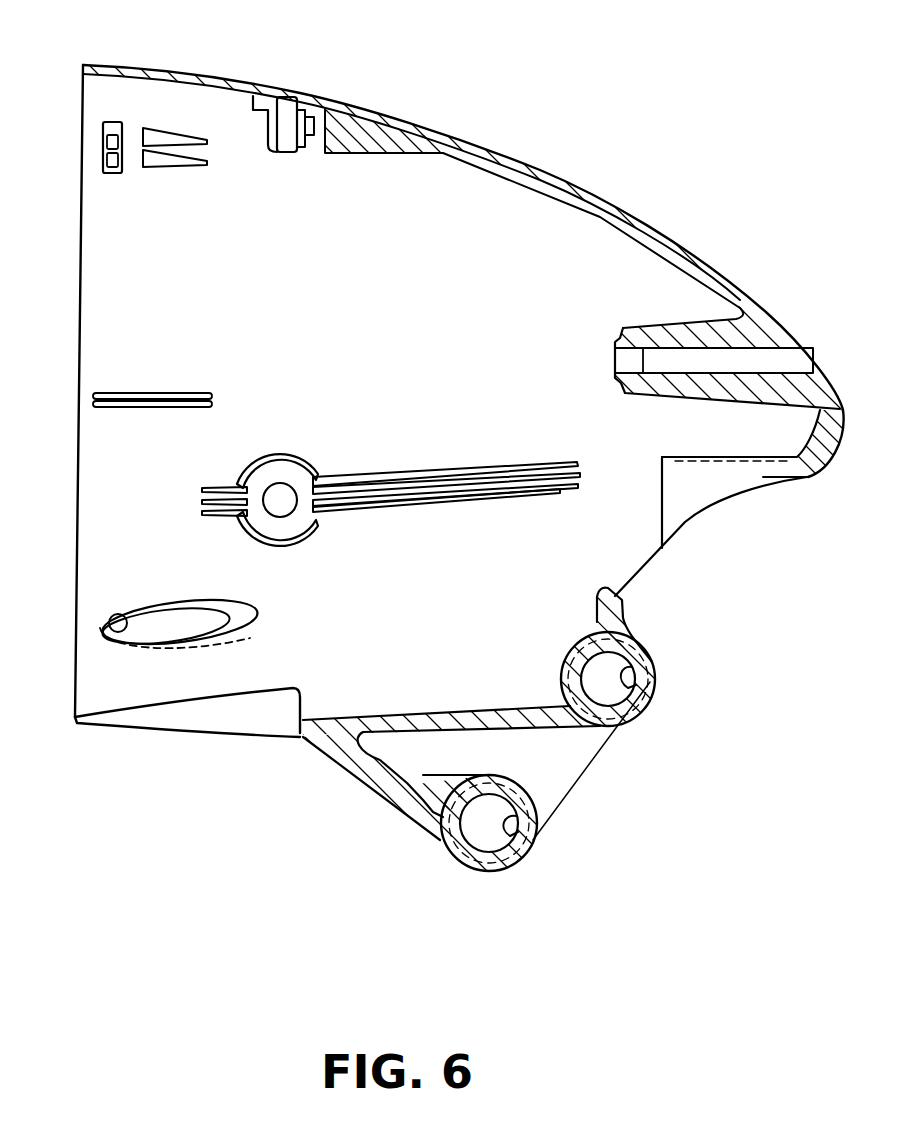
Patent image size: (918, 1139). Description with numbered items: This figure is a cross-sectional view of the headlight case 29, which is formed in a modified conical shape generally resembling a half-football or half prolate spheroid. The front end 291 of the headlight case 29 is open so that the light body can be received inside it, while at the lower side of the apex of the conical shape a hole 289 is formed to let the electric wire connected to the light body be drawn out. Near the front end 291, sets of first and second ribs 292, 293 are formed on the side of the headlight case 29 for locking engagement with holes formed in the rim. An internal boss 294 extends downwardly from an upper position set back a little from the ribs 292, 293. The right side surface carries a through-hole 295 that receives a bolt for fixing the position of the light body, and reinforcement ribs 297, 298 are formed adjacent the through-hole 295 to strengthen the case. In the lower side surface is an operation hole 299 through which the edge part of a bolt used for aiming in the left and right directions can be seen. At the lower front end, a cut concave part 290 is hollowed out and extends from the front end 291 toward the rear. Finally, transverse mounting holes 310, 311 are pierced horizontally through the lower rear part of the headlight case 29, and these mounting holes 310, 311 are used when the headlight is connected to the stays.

The headlight case 29 is at (568, 182).
The hole 289 is at (637, 565).
The cut concave part 290 is at (188, 723).
The front end 291 is at (78, 313).
The first rib 292 is at (90, 163).
The second rib 293 is at (158, 128).
The internal boss 294 is at (265, 137).
The through-hole 295 is at (278, 506).
The reinforcement rib 297 is at (438, 505).
The reinforcement rib 298 is at (228, 518).
The operation hole 299 is at (112, 622).
The mounting hole 310 is at (650, 682).
The mounting hole 311 is at (533, 840).